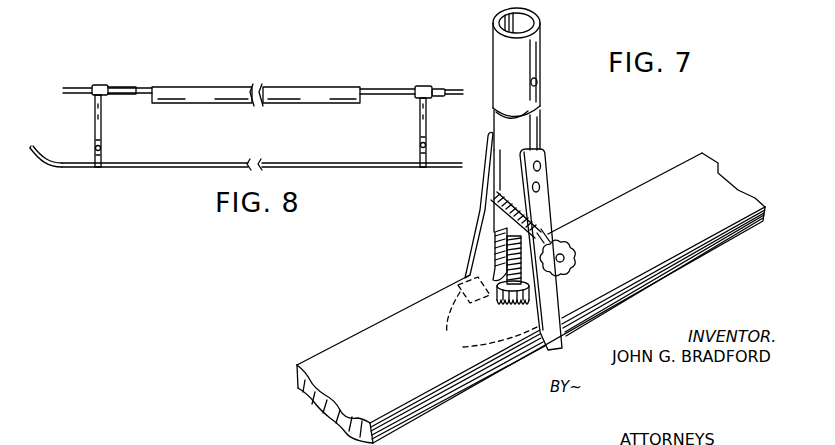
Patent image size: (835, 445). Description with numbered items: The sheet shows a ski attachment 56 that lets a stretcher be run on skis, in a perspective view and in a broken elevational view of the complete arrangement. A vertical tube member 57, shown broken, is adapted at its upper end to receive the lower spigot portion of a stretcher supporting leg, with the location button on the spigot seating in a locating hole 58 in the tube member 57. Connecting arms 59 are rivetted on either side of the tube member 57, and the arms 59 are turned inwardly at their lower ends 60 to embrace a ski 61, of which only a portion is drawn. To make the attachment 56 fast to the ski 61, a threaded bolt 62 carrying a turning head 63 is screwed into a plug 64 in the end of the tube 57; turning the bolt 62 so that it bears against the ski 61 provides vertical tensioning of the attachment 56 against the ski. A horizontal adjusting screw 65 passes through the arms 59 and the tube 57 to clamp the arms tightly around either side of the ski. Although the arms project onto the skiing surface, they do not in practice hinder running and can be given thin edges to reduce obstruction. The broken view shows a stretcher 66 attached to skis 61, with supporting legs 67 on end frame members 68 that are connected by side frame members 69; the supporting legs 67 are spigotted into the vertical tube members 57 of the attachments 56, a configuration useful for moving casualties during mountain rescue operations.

In FIG. 8, the attachment 56 is at (104, 148).
In FIG. 7, the attachment 56 is at (519, 239).
In FIG. 8, the vertical tube member 57 is at (102, 118).
In FIG. 7, the vertical tube member 57 is at (531, 128).
In FIG. 7, the locating hole 58 is at (537, 82).
In FIG. 7, the connecting arms 59 is at (468, 268).
In FIG. 7, the lower ends 60 is at (485, 319).
In FIG. 8, the ski 61 is at (162, 167).
In FIG. 7, the ski 61 is at (395, 322).
In FIG. 7, the threaded bolt 62 is at (495, 293).
In FIG. 7, the turning head 63 is at (497, 279).
In FIG. 7, the plug 64 is at (512, 232).
In FIG. 7, the horizontal adjusting screw 65 is at (577, 248).
In FIG. 8, the stretcher 66 is at (183, 88).
In FIG. 8, the supporting legs 67 is at (93, 98).
In FIG. 8, the end frame members 68 is at (99, 85).
In FIG. 8, the side frame members 69 is at (136, 87).